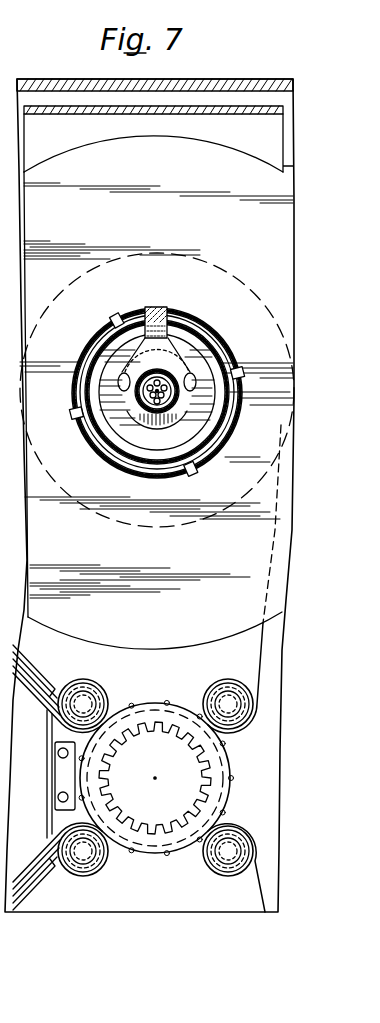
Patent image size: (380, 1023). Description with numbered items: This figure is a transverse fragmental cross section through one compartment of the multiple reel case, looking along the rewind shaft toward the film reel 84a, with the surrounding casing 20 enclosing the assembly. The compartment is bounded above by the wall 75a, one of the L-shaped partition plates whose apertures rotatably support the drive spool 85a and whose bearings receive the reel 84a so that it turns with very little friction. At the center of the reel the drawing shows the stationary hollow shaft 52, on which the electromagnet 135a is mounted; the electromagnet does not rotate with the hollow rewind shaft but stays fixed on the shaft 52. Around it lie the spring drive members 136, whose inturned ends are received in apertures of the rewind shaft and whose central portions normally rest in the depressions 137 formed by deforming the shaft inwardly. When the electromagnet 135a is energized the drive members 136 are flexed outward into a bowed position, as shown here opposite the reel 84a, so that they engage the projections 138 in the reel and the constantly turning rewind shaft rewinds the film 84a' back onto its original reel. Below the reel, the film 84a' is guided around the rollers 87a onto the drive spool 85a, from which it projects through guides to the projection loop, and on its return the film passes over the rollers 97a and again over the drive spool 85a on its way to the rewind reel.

The housing 20 is at (219, 87).
The wall 75a is at (76, 143).
The film reel 84a is at (157, 392).
The film 84a' is at (243, 547).
The electromagnet 135a is at (197, 420).
The spring drive member 136 is at (168, 324).
The depression 137 is at (170, 322).
The projection 138 is at (125, 322).
The stationary hollow shaft 52 is at (142, 407).
The roller 87a is at (204, 689).
The drive spool 85a is at (217, 763).
The roller 97a is at (202, 860).